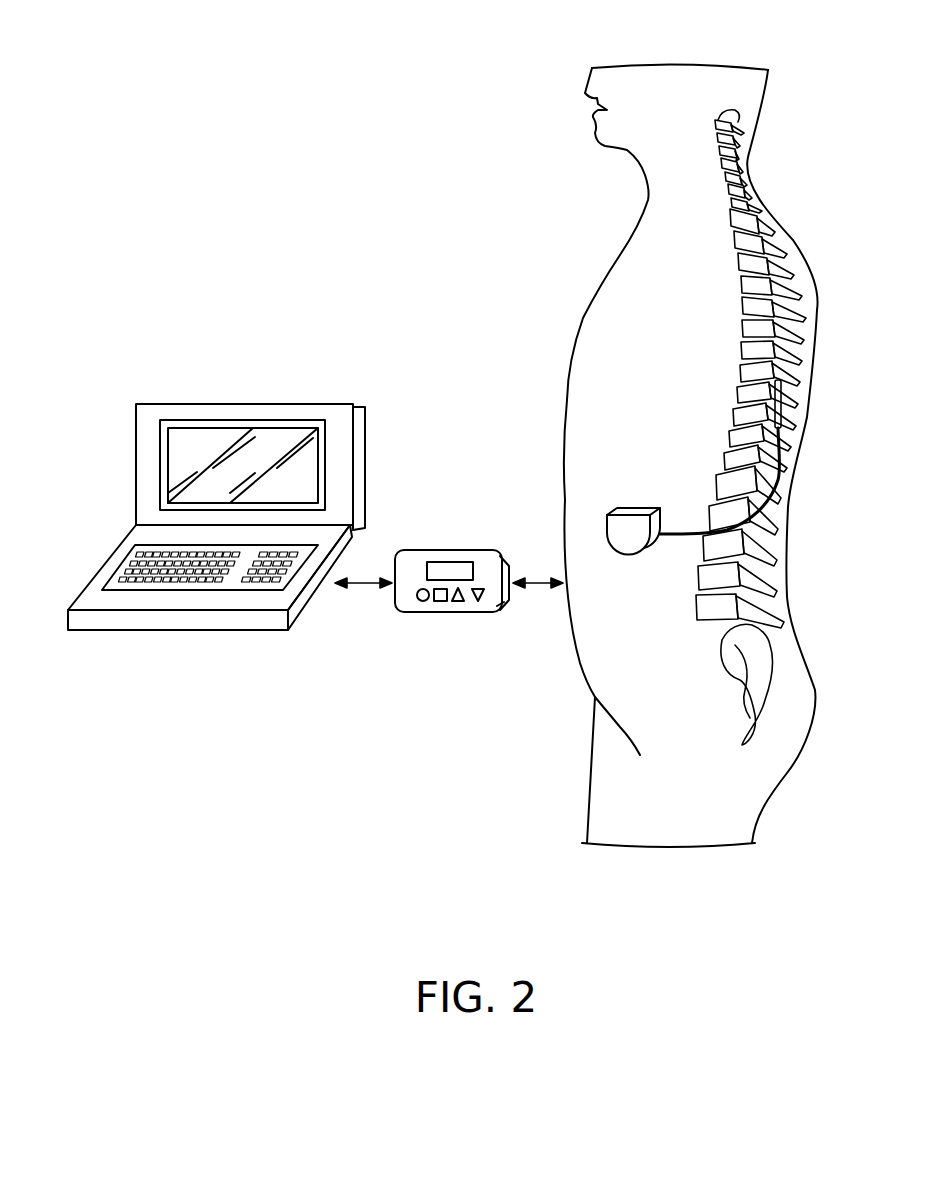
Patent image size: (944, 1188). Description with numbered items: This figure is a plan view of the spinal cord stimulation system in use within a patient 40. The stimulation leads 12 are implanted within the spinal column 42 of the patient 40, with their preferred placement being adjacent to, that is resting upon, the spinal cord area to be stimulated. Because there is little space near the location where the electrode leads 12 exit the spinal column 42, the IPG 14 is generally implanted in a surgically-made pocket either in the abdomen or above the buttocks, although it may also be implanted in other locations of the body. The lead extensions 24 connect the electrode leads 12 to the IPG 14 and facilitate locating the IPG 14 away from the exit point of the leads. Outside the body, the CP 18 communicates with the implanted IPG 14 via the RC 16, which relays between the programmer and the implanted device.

The stimulation leads 12 is at (786, 405).
The IPG 14 is at (633, 538).
The RC 16 is at (476, 532).
The CP 18 is at (232, 398).
The lead extensions 24 is at (780, 488).
The patient 40 is at (583, 318).
The spinal column 42 is at (740, 378).